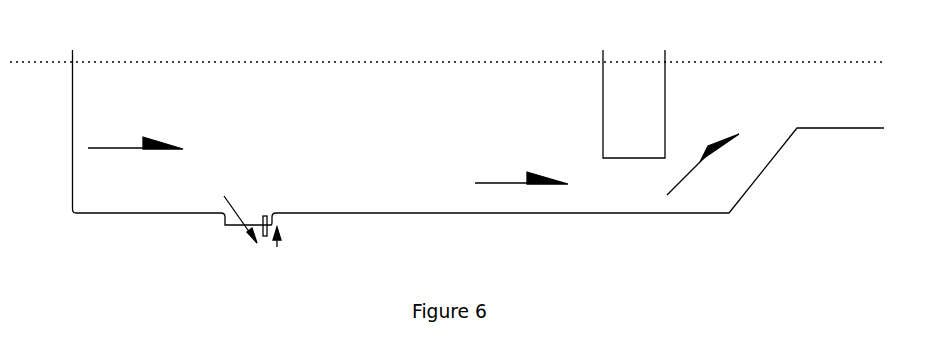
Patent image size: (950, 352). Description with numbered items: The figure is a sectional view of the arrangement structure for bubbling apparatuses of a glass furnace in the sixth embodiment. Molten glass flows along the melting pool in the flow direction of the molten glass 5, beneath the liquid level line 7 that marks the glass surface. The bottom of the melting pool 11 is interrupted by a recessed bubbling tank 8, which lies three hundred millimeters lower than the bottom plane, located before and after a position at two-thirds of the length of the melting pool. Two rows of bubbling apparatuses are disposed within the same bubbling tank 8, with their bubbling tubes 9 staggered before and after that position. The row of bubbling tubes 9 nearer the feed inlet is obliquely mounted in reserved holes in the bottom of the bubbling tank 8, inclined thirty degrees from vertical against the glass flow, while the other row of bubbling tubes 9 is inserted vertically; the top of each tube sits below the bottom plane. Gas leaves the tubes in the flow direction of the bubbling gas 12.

The flow direction of the molten glass 5 is at (548, 172).
The liquid level line 7 is at (767, 62).
The bubbling tank 8 is at (265, 216).
The bubbling tube 9 is at (258, 247).
The bottom of the melting pool 11 is at (108, 209).
The flow direction of the bubbling gas 12 is at (278, 247).